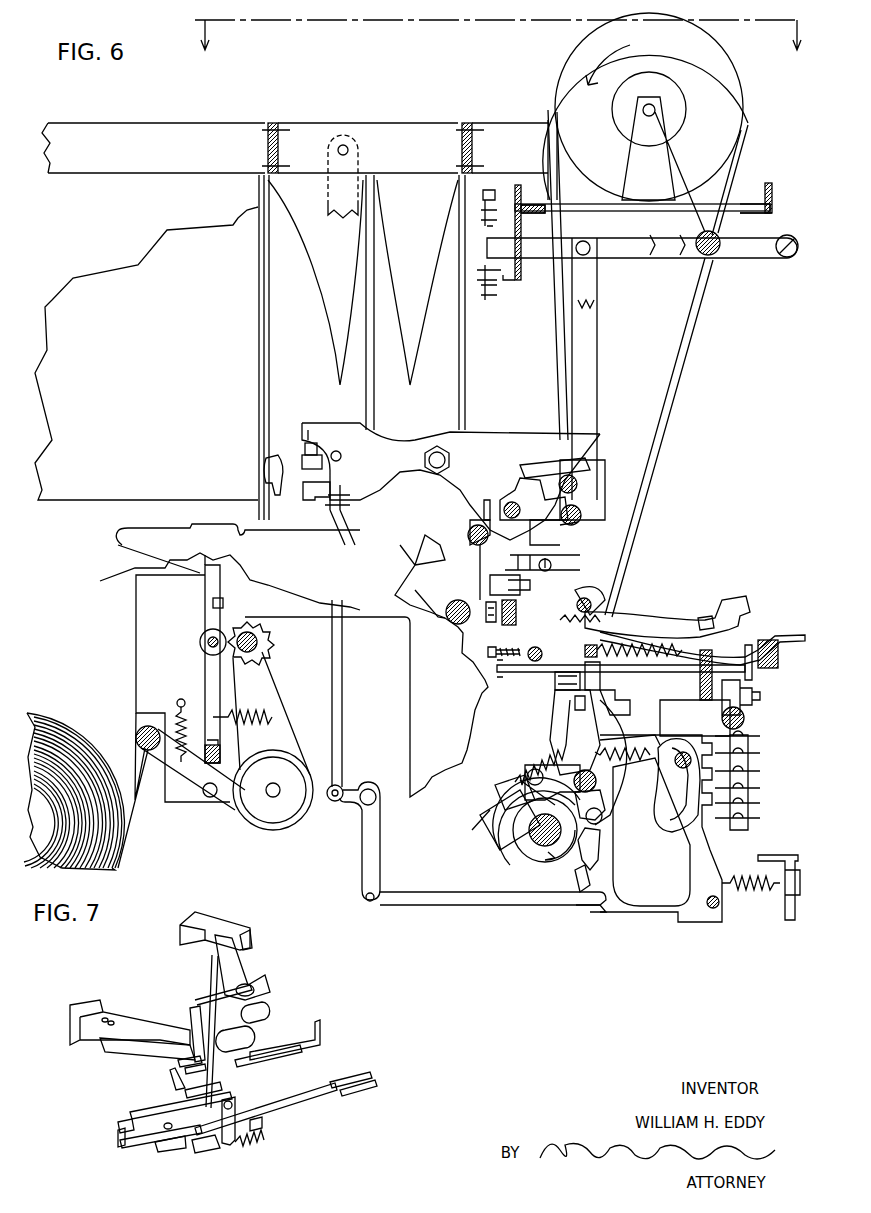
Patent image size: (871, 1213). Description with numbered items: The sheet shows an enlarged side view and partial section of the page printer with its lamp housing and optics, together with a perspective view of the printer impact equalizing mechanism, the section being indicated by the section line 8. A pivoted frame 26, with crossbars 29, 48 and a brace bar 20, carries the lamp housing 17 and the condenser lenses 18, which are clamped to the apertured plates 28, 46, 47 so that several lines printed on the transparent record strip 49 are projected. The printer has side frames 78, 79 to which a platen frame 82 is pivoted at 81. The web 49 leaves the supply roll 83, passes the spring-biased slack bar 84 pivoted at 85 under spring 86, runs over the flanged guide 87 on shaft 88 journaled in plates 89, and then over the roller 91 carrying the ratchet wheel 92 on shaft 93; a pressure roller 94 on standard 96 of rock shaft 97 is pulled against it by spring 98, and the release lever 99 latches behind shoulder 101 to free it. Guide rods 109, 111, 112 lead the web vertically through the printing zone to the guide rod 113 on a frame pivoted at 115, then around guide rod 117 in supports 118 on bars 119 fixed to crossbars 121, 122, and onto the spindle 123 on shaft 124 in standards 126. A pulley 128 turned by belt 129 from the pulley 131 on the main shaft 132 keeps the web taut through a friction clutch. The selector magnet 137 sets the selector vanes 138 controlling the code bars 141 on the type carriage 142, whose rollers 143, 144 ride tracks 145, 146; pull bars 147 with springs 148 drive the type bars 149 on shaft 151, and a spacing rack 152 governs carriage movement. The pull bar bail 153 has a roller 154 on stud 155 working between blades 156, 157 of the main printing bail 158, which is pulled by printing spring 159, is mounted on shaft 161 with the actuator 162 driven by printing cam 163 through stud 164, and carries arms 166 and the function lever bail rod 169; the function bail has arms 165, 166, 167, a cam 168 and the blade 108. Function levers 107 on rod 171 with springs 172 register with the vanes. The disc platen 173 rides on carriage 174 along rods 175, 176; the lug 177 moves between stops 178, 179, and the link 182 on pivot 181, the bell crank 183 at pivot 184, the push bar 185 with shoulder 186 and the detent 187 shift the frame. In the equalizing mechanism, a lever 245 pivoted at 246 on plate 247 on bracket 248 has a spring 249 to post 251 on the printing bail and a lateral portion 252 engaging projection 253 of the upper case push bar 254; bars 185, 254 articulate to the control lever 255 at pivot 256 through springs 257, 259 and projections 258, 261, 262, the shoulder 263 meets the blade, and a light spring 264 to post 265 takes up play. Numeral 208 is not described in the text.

In FIG. 6, the section line 8 is at (501, 28).
In FIG. 6, the lamp housing 17 is at (70, 505).
In FIG. 6, the condenser lenses 18 is at (440, 246).
In FIG. 6, the bar 20 is at (328, 196).
In FIG. 6, the frame 26 is at (178, 123).
In FIG. 6, the plate 28 is at (262, 186).
In FIG. 6, the crossbar 29 is at (280, 140).
In FIG. 6, the plate 46 is at (375, 185).
In FIG. 6, the plate 47 is at (460, 187).
In FIG. 6, the crossbar 48 is at (478, 140).
In FIG. 6, the record strip 49 is at (598, 389).
In FIG. 6, the side frame 78 is at (125, 548).
In FIG. 6, the side frame 79 is at (120, 575).
In FIG. 7, the side frame 79 is at (72, 1017).
In FIG. 6, the pivot 81 is at (445, 458).
In FIG. 6, the platen frame 82 is at (536, 442).
In FIG. 6, the supply roll 83 is at (48, 725).
In FIG. 6, the slack bar 84 is at (148, 752).
In FIG. 6, the pivot 85 is at (207, 798).
In FIG. 6, the spring 86 is at (178, 725).
In FIG. 6, the flanged cylindrical guide 87 is at (298, 772).
In FIG. 6, the shaft 88 is at (277, 797).
In FIG. 6, the plates 89 is at (136, 633).
In FIG. 6, the roller 91 is at (250, 665).
In FIG. 6, the ratchet wheel 92 is at (268, 650).
In FIG. 6, the shaft 93 is at (258, 639).
In FIG. 6, the pressure roller 94 is at (202, 650).
In FIG. 6, the standard 96 is at (206, 682).
In FIG. 6, the rock shaft 97 is at (215, 763).
In FIG. 6, the spring 98 is at (245, 725).
In FIG. 6, the pressure roller release lever 99 is at (205, 620).
In FIG. 6, the shoulder 101 is at (224, 607).
In FIG. 6, the function lever 107 is at (690, 840).
In FIG. 7, the function lever 107 is at (358, 1090).
In FIG. 6, the function bail blade 108 is at (588, 880).
In FIG. 6, the guide rod 109 is at (446, 608).
In FIG. 6, the guide rod 111 is at (468, 538).
In FIG. 6, the guide rod 112 is at (583, 518).
In FIG. 6, the guide rod 113 is at (590, 255).
In FIG. 6, the pivot 115 is at (787, 258).
In FIG. 6, the guide rod 117 is at (712, 256).
In FIG. 6, the supports 118 is at (700, 220).
In FIG. 6, the bars 119 is at (735, 204).
In FIG. 6, the angle iron cross bar 121 is at (521, 190).
In FIG. 6, the angle iron cross bar 122 is at (773, 190).
In FIG. 6, the spindle 123 is at (678, 92).
In FIG. 6, the shaft 124 is at (656, 110).
In FIG. 6, the standards 126 is at (660, 128).
In FIG. 6, the pulley 128 is at (710, 57).
In FIG. 6, the belt 129 is at (680, 330).
In FIG. 6, the pulley 131 is at (512, 858).
In FIG. 6, the main operating shaft 132 is at (538, 845).
In FIG. 7, the main operating shaft 132 is at (247, 1037).
In FIG. 6, the selector magnet 137 is at (480, 822).
In FIG. 6, the selector vanes 138 is at (762, 775).
In FIG. 6, the code bars 141 is at (770, 670).
In FIG. 6, the type carriage 142 is at (765, 702).
In FIG. 6, the roller 143 is at (710, 700).
In FIG. 6, the roller 144 is at (515, 622).
In FIG. 6, the track 145 is at (745, 722).
In FIG. 6, the track 146 is at (493, 622).
In FIG. 6, the pull bars 147 is at (735, 630).
In FIG. 6, the springs 148 is at (650, 660).
In FIG. 6, the type bars 149 is at (682, 615).
In FIG. 6, the shaft 151 is at (598, 597).
In FIG. 6, the spacing rack 152 is at (486, 656).
In FIG. 6, the pull bar bail 153 is at (495, 667).
In FIG. 6, the roller 154 is at (555, 685).
In FIG. 6, the stud 155 is at (572, 700).
In FIG. 6, the blade 156 is at (545, 715).
In FIG. 7, the blade 156 is at (225, 928).
In FIG. 6, the blade 157 is at (600, 680).
In FIG. 7, the blade 157 is at (252, 941).
In FIG. 6, the main printing bail 158 is at (568, 730).
In FIG. 7, the main printing bail 158 is at (258, 966).
In FIG. 6, the printing spring 159 is at (626, 748).
In FIG. 6, the shaft 161 is at (597, 783).
In FIG. 7, the shaft 161 is at (268, 1012).
In FIG. 6, the printing bail actuator 162 is at (605, 798).
In FIG. 6, the printing cam 163 is at (595, 835).
In FIG. 6, the stud 164 is at (615, 702).
In FIG. 6, the arm 165 is at (555, 770).
In FIG. 6, the arm 166 is at (645, 800).
In FIG. 6, the arm 167 is at (597, 855).
In FIG. 6, the function bail cam 168 is at (500, 795).
In FIG. 6, the function lever bail rod 169 is at (672, 832).
In FIG. 6, the pivot rod 171 is at (720, 906).
In FIG. 6, the springs 172 is at (755, 865).
In FIG. 6, the platen 173 is at (535, 468).
In FIG. 6, the platen carriage 174 is at (538, 492).
In FIG. 6, the rod 175 is at (512, 502).
In FIG. 6, the rod 176 is at (580, 487).
In FIG. 6, the lug 177 is at (305, 455).
In FIG. 6, the stop screw 178 is at (305, 440).
In FIG. 6, the stop screw 179 is at (304, 492).
In FIG. 6, the pivot 181 is at (340, 462).
In FIG. 6, the link 182 is at (343, 697).
In FIG. 7, the link 182 is at (211, 980).
In FIG. 6, the bell crank lever 183 is at (362, 862).
In FIG. 7, the bell crank lever 183 is at (236, 1114).
In FIG. 6, the pivot 184 is at (368, 789).
In FIG. 7, the pivot 184 is at (232, 1104).
In FIG. 6, the push bar 185 is at (508, 906).
In FIG. 7, the push bar 185 is at (305, 1100).
In FIG. 6, the shoulder 186 is at (570, 912).
In FIG. 7, the shoulder 186 is at (338, 1082).
In FIG. 6, the detent member 187 is at (266, 475).
In FIG. 6, the bracket 208 is at (528, 558).
In FIG. 7, the lever 245 is at (190, 1018).
In FIG. 7, the pivot 246 is at (205, 1092).
In FIG. 7, the plate 247 is at (172, 1085).
In FIG. 7, the bracket 248 is at (155, 1044).
In FIG. 7, the spring 249 is at (205, 1008).
In FIG. 7, the spring post 251 is at (256, 990).
In FIG. 7, the laterally extending portion 252 is at (160, 1108).
In FIG. 7, the projection 253 is at (173, 1127).
In FIG. 7, the upper case shift push bar 254 is at (280, 1068).
In FIG. 7, the platen shift control lever 255 is at (140, 1145).
In FIG. 7, the pivot 256 is at (168, 1150).
In FIG. 7, the spring 257 is at (118, 1125).
In FIG. 7, the projection 258 is at (118, 1140).
In FIG. 7, the spring 259 is at (245, 1145).
In FIG. 7, the projection 261 is at (262, 1125).
In FIG. 7, the projection 262 is at (200, 1153).
In FIG. 7, the shoulder 263 is at (265, 1068).
In FIG. 7, the spring 264 is at (178, 1062).
In FIG. 7, the spring post 265 is at (185, 1071).